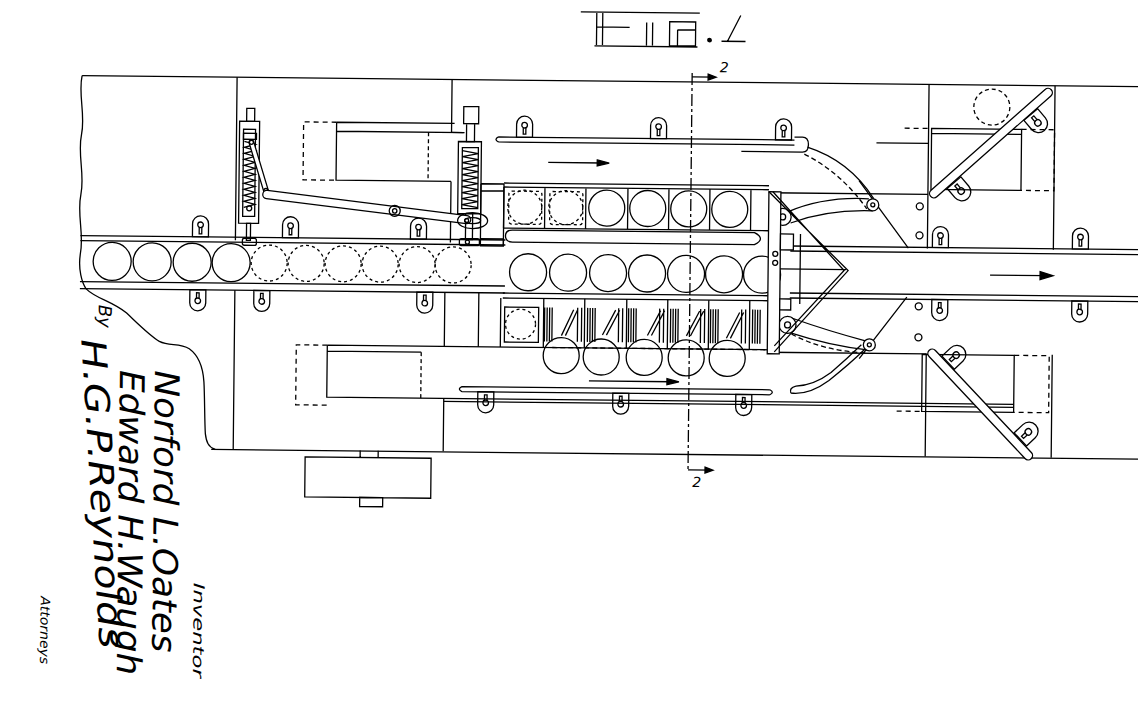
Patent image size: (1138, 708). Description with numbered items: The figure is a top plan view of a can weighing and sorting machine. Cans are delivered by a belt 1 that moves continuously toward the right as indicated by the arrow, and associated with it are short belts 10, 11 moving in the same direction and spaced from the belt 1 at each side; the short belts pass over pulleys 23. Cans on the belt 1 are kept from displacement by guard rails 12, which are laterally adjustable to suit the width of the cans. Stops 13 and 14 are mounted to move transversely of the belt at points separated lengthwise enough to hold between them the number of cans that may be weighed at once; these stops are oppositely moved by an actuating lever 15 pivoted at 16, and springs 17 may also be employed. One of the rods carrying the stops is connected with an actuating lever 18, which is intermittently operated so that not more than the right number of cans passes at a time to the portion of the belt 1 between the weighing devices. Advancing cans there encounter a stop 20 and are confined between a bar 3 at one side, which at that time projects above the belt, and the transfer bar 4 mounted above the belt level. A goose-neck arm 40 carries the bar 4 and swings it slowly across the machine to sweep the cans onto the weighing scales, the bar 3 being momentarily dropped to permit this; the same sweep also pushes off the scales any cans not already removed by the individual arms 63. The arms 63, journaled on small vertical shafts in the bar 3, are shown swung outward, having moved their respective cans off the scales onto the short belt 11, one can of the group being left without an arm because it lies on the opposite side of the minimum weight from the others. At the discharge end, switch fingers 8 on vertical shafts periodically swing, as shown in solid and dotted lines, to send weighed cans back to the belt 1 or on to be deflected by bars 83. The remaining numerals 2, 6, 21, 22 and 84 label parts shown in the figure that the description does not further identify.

The belt 1 is at (80, 274).
The frame 2 is at (743, 188).
The bar 3 is at (563, 302).
The transfer bar 4 is at (552, 244).
The pusher fingers 6 is at (636, 324).
The switch fingers 8 is at (838, 203).
The belt 10 is at (637, 195).
The belt 11 is at (492, 369).
The guard rails 12 is at (153, 241).
The stop 13 is at (255, 231).
The stop 14 is at (467, 256).
The actuating lever 15 is at (352, 209).
The pivot 16 is at (396, 208).
The spring 17 is at (240, 192).
The actuating lever 18 is at (475, 112).
The stop 20 is at (736, 260).
The roller 21 is at (593, 190).
The container 22 is at (548, 186).
The pulleys 23 is at (300, 154).
The goose-neck arm 40 is at (777, 280).
The arm 63 is at (572, 332).
The bars 83 is at (978, 160).
The guide rail 84 is at (723, 143).